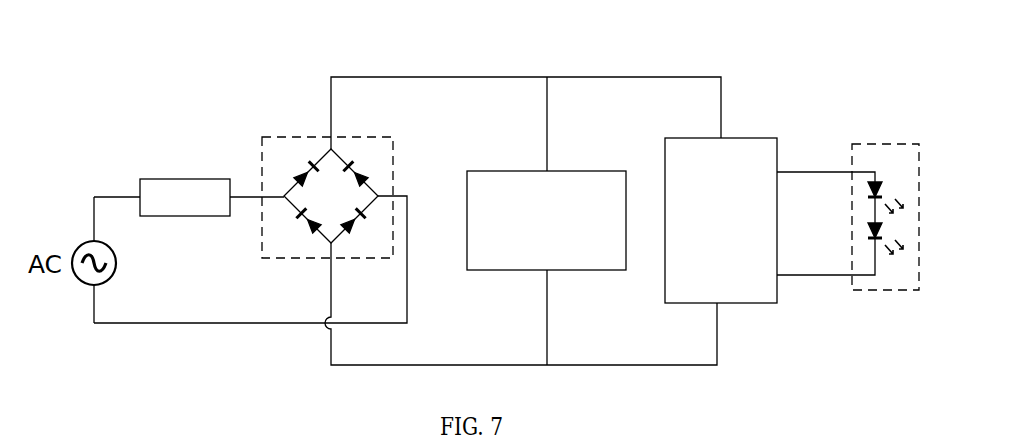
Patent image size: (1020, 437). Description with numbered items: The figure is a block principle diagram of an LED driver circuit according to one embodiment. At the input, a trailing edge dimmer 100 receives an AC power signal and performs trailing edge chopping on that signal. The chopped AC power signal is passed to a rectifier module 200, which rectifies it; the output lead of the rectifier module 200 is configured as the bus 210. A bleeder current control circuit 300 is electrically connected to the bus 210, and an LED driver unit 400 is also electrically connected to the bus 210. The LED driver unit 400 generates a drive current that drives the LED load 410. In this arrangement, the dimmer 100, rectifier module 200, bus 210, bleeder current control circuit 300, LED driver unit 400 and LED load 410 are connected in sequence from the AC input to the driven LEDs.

The trailing edge dimmer 100 is at (153, 178).
The rectifier module 200 is at (283, 147).
The bus 210 is at (407, 77).
The bleeder current control circuit 300 is at (498, 171).
The LED driver unit 400 is at (665, 138).
The LED load 410 is at (875, 158).